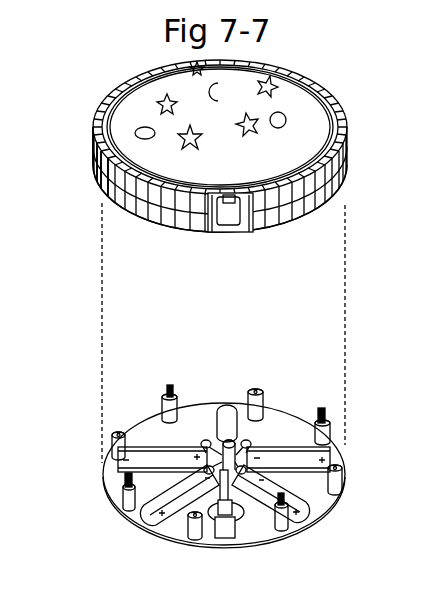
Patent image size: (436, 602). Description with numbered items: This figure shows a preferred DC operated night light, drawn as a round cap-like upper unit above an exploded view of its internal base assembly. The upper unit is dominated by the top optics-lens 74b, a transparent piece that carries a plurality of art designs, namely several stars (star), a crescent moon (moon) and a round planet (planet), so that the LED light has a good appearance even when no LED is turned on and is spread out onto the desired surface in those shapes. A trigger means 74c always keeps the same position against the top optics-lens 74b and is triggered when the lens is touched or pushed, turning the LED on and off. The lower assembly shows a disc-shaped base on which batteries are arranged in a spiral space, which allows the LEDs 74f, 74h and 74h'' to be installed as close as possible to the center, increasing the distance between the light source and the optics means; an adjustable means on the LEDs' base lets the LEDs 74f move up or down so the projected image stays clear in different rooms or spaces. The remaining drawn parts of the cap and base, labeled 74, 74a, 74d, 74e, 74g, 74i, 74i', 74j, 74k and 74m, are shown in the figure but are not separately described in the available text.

The cap assembly 74 is at (182, 90).
The outer rim of cap 74a is at (112, 93).
The top optics-lens 74b is at (308, 135).
The trigger means 74c is at (322, 162).
The side rib of cap 74d is at (107, 178).
The switch notch on cap 74e is at (230, 218).
The LEDs 74f is at (238, 458).
The battery 74g is at (263, 495).
The LEDs 74h is at (251, 459).
The LEDs 74h'' is at (159, 437).
The support post 74i is at (148, 545).
The support post 74i' is at (282, 385).
The support post with pin 74j is at (118, 480).
The central shaft 74k is at (232, 502).
The switch block 74m is at (225, 530).
The moon art design moon is at (217, 88).
The star art designs star is at (263, 88).
The planet art design planet is at (283, 122).